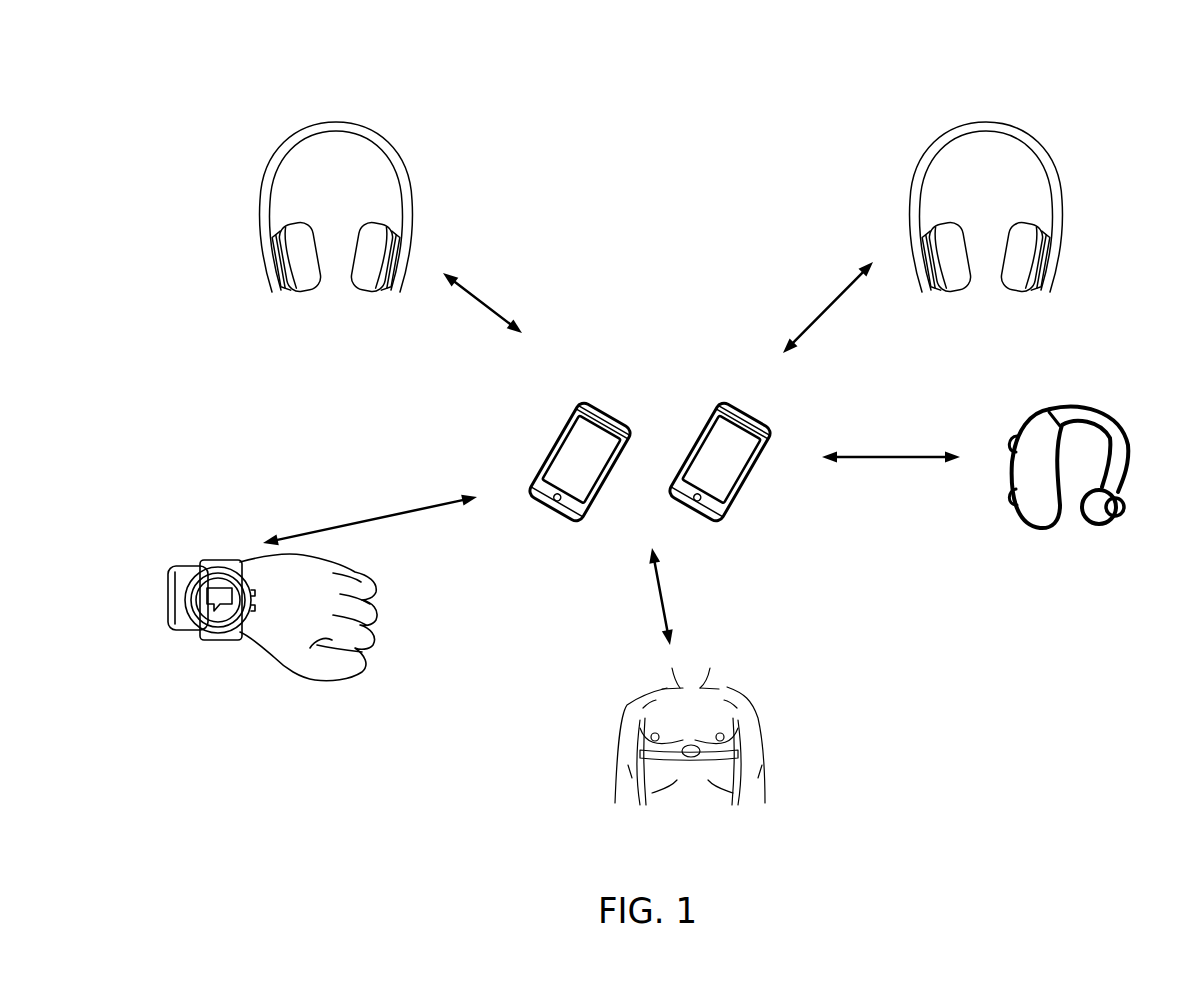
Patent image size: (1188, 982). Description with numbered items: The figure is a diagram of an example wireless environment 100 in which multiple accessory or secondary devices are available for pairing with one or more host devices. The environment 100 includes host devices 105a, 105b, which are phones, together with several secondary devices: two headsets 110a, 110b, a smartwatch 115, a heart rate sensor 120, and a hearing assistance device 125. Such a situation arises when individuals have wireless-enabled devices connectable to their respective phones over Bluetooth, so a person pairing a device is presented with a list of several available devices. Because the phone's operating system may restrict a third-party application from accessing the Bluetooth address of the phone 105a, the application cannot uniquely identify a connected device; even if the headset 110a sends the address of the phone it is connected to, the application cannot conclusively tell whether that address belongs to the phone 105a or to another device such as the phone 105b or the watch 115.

The environment 100 is at (682, 38).
The host device 105a is at (565, 462).
The host device 105b is at (731, 462).
The headset 110a is at (310, 208).
The headset 110b is at (1010, 207).
The smartwatch 115 is at (272, 626).
The heart rate sensor 120 is at (690, 761).
The hearing assistance device 125 is at (1090, 454).